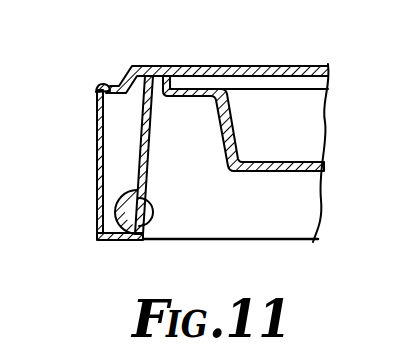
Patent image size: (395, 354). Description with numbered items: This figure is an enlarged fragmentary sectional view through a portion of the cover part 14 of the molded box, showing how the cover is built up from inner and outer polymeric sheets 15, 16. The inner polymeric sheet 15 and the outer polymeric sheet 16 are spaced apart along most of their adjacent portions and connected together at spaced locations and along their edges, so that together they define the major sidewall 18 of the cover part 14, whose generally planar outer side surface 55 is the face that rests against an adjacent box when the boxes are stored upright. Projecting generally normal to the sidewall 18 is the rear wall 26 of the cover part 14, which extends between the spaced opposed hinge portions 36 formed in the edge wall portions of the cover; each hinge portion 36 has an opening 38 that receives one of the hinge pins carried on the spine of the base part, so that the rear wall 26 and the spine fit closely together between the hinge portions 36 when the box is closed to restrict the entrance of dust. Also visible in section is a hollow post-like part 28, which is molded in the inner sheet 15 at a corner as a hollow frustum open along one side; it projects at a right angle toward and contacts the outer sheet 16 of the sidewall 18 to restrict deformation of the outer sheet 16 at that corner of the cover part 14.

The cover part 14 is at (92, 88).
The inner polymeric sheet 15 is at (150, 161).
The outer polymeric sheet 16 is at (97, 173).
The sidewall 18 is at (315, 67).
The rear wall 26 is at (312, 126).
The hollow post-like part 28 is at (167, 74).
The hinge portion 36 is at (108, 226).
The opening 38 is at (124, 208).
The outer side surface 55 is at (213, 68).